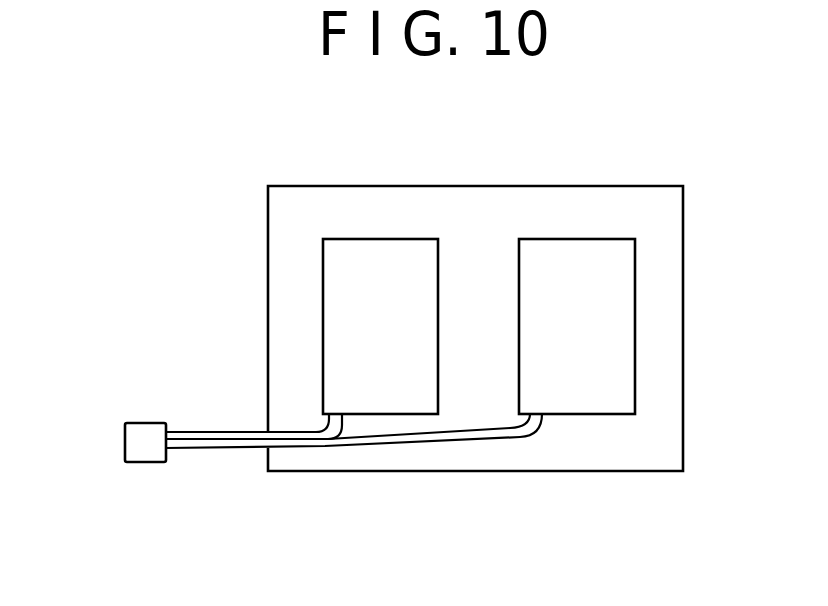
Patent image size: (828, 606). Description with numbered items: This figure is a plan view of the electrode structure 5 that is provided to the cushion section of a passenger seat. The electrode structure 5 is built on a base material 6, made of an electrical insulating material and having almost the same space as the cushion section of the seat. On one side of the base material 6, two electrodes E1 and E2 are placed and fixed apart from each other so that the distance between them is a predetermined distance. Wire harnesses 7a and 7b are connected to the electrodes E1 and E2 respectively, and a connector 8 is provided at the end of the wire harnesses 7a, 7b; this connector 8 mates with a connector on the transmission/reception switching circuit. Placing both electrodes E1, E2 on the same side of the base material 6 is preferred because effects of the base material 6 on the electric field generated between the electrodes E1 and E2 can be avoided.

The electrode structure 5 is at (298, 186).
The base material 6 is at (353, 203).
The electrode E1 is at (402, 239).
The electrode E2 is at (572, 239).
The wire harness 7a is at (295, 438).
The wire harness 7b is at (440, 438).
The connector 8 is at (148, 463).